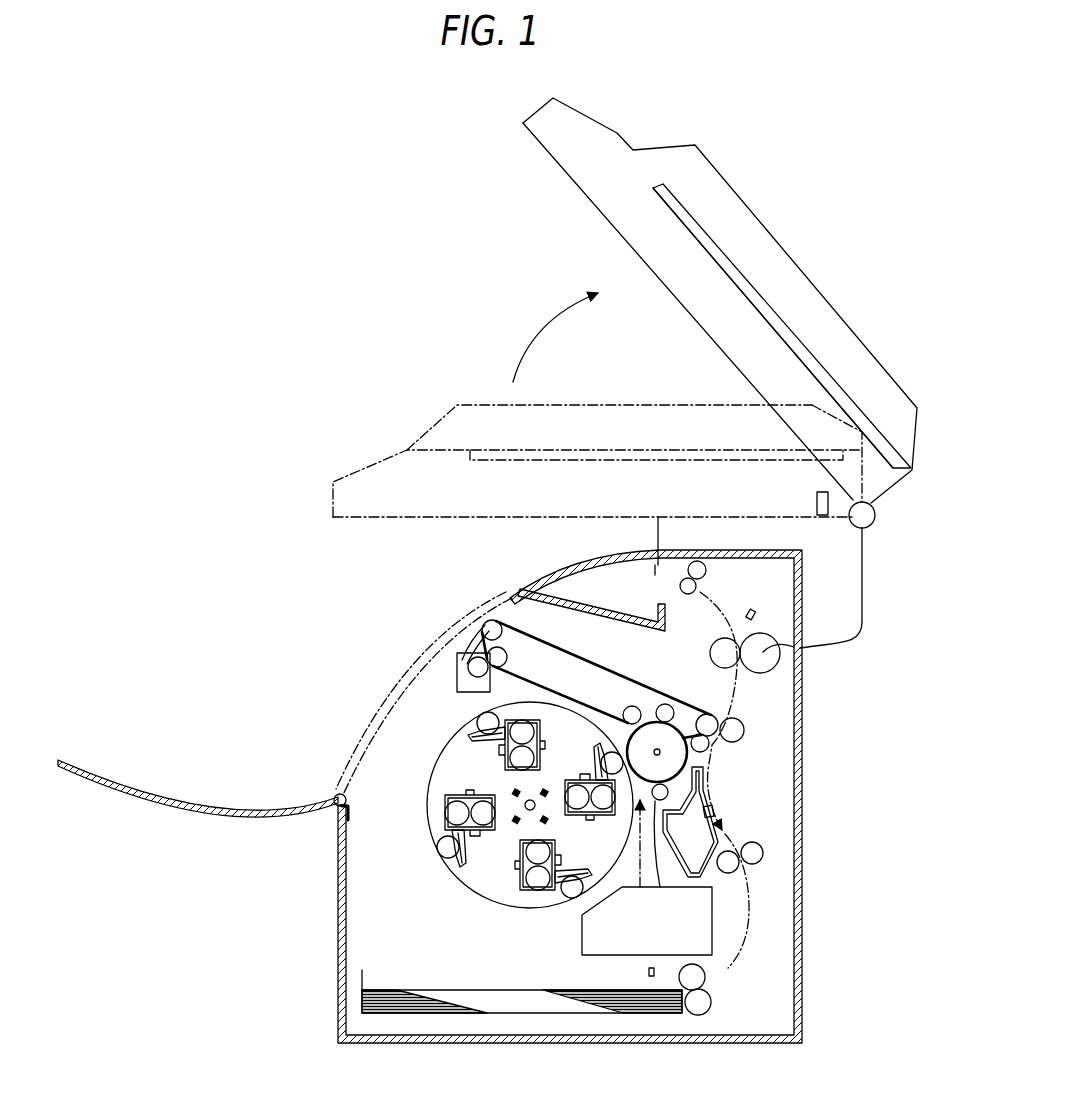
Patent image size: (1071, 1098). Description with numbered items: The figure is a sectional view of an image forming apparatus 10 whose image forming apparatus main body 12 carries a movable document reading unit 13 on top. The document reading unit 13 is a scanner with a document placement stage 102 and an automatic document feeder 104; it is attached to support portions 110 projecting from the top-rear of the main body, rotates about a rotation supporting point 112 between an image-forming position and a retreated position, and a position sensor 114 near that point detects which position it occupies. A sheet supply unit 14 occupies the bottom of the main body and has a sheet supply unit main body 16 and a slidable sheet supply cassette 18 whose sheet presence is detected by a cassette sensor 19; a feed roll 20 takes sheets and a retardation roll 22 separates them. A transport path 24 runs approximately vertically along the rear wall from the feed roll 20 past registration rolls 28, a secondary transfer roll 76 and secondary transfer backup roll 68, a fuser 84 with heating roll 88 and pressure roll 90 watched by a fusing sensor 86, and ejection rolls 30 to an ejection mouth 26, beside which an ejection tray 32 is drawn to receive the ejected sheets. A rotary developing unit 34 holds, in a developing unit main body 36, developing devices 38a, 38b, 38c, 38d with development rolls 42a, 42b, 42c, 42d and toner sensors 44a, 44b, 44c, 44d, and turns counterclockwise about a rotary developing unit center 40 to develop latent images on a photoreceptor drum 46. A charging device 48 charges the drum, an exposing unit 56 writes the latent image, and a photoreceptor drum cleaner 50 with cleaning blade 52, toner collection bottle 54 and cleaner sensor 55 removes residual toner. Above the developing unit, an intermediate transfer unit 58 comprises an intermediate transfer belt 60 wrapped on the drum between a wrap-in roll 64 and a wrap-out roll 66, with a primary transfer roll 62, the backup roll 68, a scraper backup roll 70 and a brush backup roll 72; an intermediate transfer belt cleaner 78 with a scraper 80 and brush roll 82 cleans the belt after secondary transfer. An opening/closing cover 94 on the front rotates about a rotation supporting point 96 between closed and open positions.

The image forming apparatus 10 is at (336, 312).
The image forming apparatus main body 12 is at (805, 1015).
The document reading unit 13 is at (553, 172).
The sheet supply unit 14 is at (362, 996).
The sheet supply unit main body 16 is at (380, 1014).
The sheet supply cassette 18 is at (420, 1014).
The cassette sensor 19 is at (648, 973).
The feed roll 20 is at (706, 973).
The retardation roll 22 is at (711, 1003).
The transport path 24 is at (745, 960).
The ejection mouth 26 is at (652, 590).
The registration rolls 28 is at (757, 862).
The ejection rolls 30 is at (706, 572).
The discharge tray 32 is at (583, 606).
The rotary developing unit 34 is at (458, 895).
The developing unit main body 36 is at (430, 772).
The developing device 38a is at (583, 781).
The developing device 38b is at (565, 860).
The developing device 38c is at (471, 836).
The developing device 38d is at (495, 750).
The rotary developing unit center 40 is at (536, 802).
The development roll 42a is at (595, 752).
The development roll 42b is at (588, 873).
The development roll 42c is at (432, 851).
The development roll 42d is at (454, 726).
The toner sensor 44a is at (595, 807).
The toner sensor 44b is at (525, 866).
The toner sensor 44c is at (464, 804).
The toner sensor 44d is at (532, 738).
The photoreceptor drum 46 is at (690, 770).
The charging device 48 is at (654, 835).
The photoreceptor drum cleaner 50 is at (736, 836).
The cleaning blade 52 is at (701, 784).
The toner collection bottle 54 is at (700, 879).
The cleaner sensor 55 is at (716, 812).
The exposing unit 56 is at (590, 929).
The intermediate transfer unit 58 is at (552, 634).
The intermediate transfer belt 60 is at (620, 672).
The primary transfer roll 62 is at (650, 710).
The wrap-in roll 64 is at (628, 708).
The wrap-out roll 66 is at (710, 745).
The secondary transfer backup roll 68 is at (705, 714).
The scraper backup roll 70 is at (503, 624).
The brush backup roll 72 is at (508, 660).
The secondary transfer roll 76 is at (798, 742).
The intermediate transfer belt cleaner 78 is at (447, 666).
The scraper 80 is at (452, 642).
The brush roll 82 is at (458, 684).
The fuser 84 is at (762, 682).
The fusing sensor 86 is at (757, 611).
The heating roll 88 is at (710, 652).
The pressure roll 90 is at (775, 641).
The opening/closing cover 94 is at (165, 792).
The rotation supporting point 96 is at (336, 796).
The document placement stage 102 is at (698, 238).
The automatic document feeder 104 is at (740, 212).
The support portions 110 is at (866, 592).
The rotation supporting point 112 is at (876, 520).
The position sensor 114 is at (817, 505).